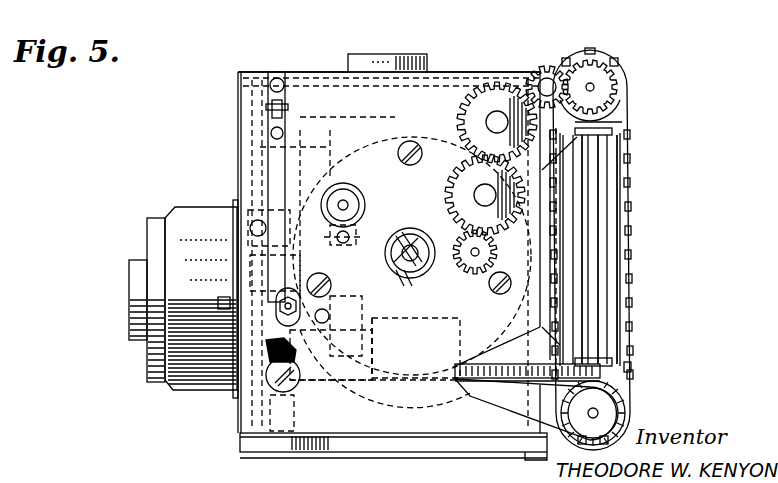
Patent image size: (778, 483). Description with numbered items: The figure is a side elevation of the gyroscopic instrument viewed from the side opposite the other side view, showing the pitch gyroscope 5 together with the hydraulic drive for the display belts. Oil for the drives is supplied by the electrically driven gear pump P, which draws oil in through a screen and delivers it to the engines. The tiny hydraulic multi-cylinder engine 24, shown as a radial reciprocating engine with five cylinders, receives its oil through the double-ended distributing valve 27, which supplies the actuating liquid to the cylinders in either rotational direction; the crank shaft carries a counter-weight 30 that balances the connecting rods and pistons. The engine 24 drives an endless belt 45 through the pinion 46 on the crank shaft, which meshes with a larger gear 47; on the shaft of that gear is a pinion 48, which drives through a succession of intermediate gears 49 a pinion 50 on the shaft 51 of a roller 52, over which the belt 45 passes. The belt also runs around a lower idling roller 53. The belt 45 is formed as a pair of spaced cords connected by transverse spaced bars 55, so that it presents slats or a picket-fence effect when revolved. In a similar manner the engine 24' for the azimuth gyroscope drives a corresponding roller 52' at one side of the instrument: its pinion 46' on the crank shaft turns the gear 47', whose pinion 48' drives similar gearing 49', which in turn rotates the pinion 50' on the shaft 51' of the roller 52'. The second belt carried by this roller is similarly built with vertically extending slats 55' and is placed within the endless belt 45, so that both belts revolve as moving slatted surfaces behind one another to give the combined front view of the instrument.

The gear pump P is at (172, 206).
The pitch gyroscope 5 is at (427, 62).
The hydraulic multi-cylinder engine 24 is at (412, 259).
The engine for the azimuth gyroscope 24' is at (416, 348).
The distributing valve 27 is at (392, 262).
The counter-weight 30 is at (404, 234).
The endless belt 45 is at (630, 306).
The pinion 46 is at (410, 227).
The pinion 46' is at (386, 291).
The gear 47 is at (469, 195).
The gear 47' is at (496, 335).
The pinion 48 is at (461, 266).
The pinion 48' is at (509, 378).
The intermediate gears 49 is at (480, 124).
The gearing 49' is at (536, 406).
The pinion 50 is at (590, 49).
The pinion 50' is at (653, 364).
The shaft 51 is at (597, 78).
The shaft 51' is at (626, 126).
The roller 52 is at (611, 242).
The roller 52' is at (638, 249).
The lower idling roller 53 is at (630, 401).
The transverse bars 55 is at (652, 249).
The slats 55' is at (631, 249).